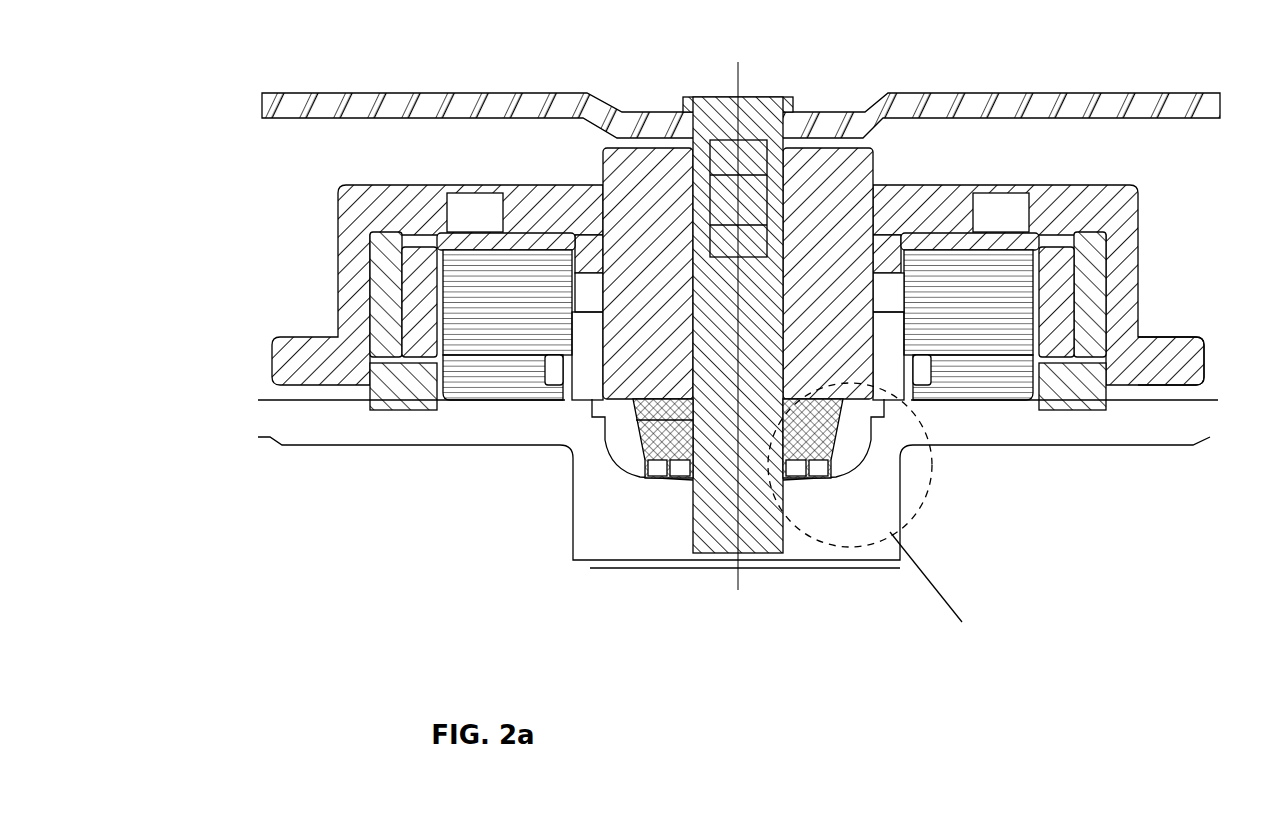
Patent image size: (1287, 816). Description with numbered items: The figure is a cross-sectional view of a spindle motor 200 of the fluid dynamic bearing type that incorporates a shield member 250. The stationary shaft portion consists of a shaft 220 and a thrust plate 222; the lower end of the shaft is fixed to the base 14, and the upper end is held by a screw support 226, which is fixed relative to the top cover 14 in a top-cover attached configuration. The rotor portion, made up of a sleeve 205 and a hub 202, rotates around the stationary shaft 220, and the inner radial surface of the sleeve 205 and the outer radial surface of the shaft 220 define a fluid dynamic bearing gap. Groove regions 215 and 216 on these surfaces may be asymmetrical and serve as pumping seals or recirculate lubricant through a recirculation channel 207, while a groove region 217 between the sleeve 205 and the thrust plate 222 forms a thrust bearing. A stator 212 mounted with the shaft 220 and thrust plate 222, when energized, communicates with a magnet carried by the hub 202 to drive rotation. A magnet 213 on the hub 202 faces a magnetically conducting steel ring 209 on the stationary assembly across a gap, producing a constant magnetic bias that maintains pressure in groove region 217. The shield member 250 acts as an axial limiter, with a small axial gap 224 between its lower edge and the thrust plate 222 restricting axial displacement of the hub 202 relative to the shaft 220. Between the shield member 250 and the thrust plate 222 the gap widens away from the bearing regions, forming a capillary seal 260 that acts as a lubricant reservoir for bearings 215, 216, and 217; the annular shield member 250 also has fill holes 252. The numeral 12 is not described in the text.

The base 12 is at (367, 425).
The base 14 is at (935, 100).
The spindle motor 200 is at (278, 209).
The hub 202 is at (837, 393).
The sleeve 205 is at (890, 399).
The recirculation channel 207 is at (913, 399).
The magnetically conducting steel ring 209 is at (1067, 408).
The stator 212 is at (993, 395).
The magnet 213 is at (1170, 372).
The groove region 215 is at (683, 238).
The groove region 216 is at (600, 402).
The groove region 217 is at (667, 407).
The shaft 220 is at (703, 565).
The thrust plate 222 is at (648, 460).
The axial gap 224 is at (680, 470).
The screw support 226 is at (740, 118).
The shield member 250 is at (838, 445).
The fill hole 252 is at (812, 485).
The capillary seal 260 is at (907, 447).